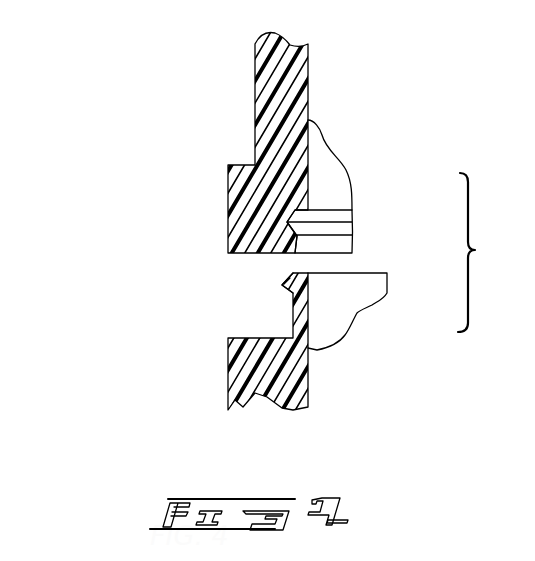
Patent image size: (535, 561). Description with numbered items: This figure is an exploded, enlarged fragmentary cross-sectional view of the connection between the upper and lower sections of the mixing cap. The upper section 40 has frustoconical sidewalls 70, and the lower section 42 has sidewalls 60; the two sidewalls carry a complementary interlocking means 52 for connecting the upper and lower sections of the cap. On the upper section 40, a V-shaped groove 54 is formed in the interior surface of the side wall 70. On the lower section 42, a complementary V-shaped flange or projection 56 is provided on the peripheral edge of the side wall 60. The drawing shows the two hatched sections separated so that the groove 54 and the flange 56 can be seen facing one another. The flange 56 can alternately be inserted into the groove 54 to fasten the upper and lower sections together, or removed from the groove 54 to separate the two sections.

The upper section 40 is at (255, 122).
The lower section 42 is at (228, 372).
The complementary interlocking means 52 is at (172, 247).
The V-shaped groove 54 is at (290, 222).
The V-shaped flange 56 is at (283, 284).
The lower section sidewalls 60 is at (300, 367).
The upper section sidewalls 70 is at (300, 98).